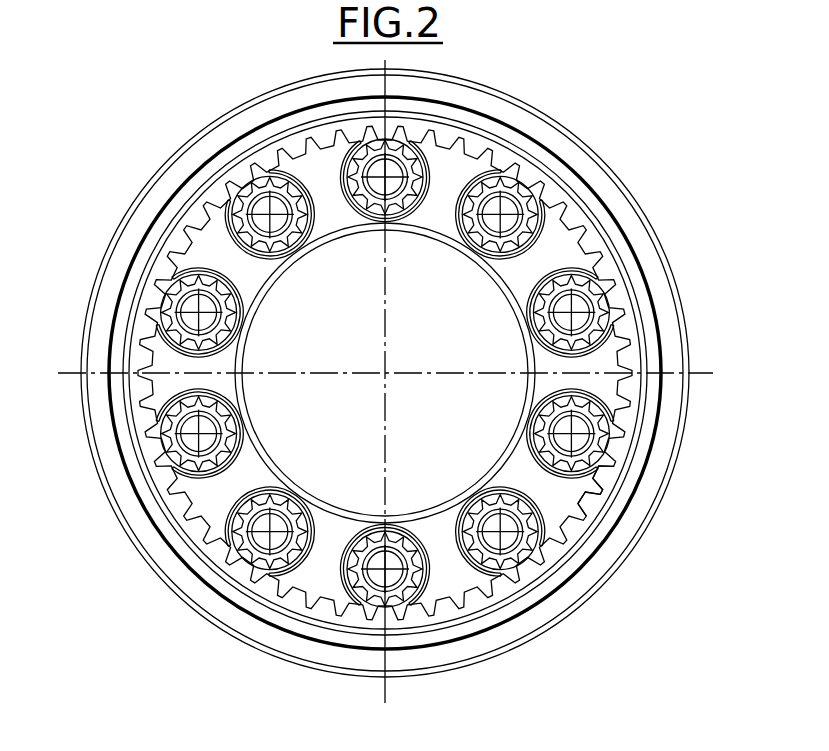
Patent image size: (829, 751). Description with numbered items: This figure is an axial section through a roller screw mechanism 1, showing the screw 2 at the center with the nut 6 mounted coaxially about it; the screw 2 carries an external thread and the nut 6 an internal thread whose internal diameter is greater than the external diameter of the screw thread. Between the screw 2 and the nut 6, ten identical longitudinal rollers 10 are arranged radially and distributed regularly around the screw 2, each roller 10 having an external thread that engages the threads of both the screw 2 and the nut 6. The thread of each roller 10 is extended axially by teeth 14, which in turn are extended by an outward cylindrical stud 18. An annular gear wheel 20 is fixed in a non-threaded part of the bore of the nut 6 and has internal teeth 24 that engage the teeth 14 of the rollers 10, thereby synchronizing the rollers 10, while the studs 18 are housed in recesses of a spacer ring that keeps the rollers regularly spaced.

The roller screw mechanism 1 is at (197, 104).
The screw 2 is at (458, 435).
The nut 6 is at (627, 528).
The longitudinal rollers 10 is at (555, 264).
The teeth 14 is at (627, 352).
The cylindrical stud 18 is at (610, 402).
The annular gear wheel 20 is at (620, 458).
The internal teeth 24 is at (593, 488).